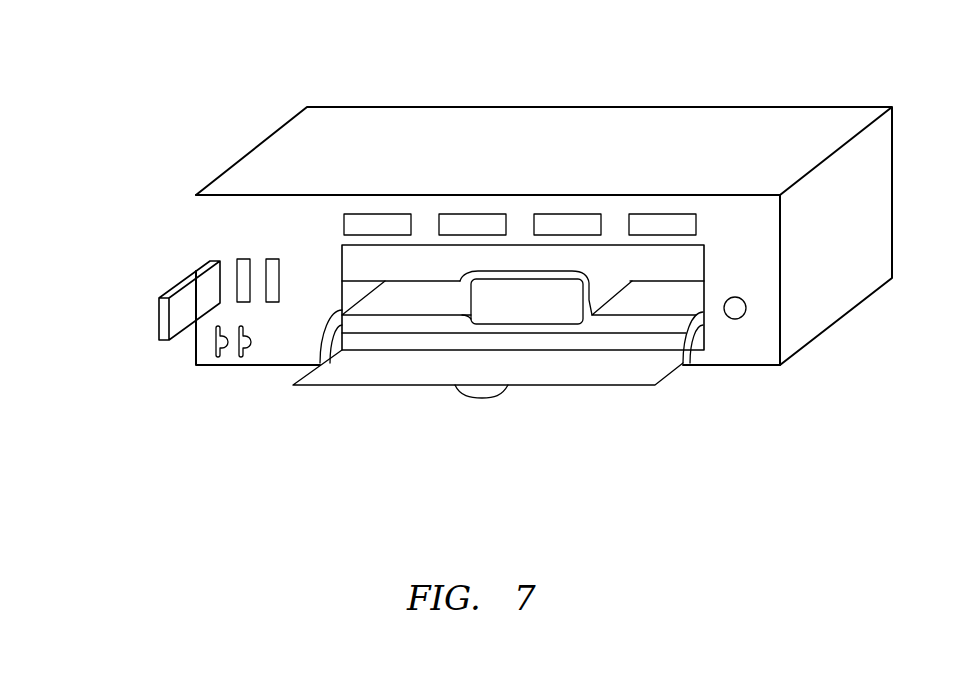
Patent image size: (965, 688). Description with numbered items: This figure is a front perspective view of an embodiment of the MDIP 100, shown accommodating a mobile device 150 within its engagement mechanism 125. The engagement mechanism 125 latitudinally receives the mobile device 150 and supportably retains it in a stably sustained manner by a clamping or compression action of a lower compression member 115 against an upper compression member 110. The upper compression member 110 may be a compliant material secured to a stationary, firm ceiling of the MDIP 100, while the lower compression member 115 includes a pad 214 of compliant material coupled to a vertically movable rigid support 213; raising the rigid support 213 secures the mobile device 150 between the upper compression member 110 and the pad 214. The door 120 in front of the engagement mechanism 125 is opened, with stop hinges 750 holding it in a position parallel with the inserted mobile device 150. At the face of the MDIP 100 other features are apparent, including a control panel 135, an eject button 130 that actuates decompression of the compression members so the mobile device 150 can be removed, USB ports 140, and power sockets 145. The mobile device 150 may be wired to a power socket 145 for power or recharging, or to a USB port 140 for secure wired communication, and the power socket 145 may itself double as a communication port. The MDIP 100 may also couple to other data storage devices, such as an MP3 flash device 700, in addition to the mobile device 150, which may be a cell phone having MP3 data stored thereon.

The MDIP 100 is at (469, 197).
The upper compression member 110 is at (925, 179).
The lower compression member 115 is at (444, 342).
The door 120 is at (690, 415).
The engagement mechanism 125 is at (418, 306).
The eject button 130 is at (769, 395).
The control panel 135 is at (328, 219).
The USB ports 140 is at (243, 262).
The power sockets 145 is at (243, 346).
The mobile device 150 is at (526, 297).
The rigid support 213 is at (602, 332).
The pad 214 is at (652, 322).
The flash device 700 is at (163, 325).
The stop hinges 750 is at (322, 360).